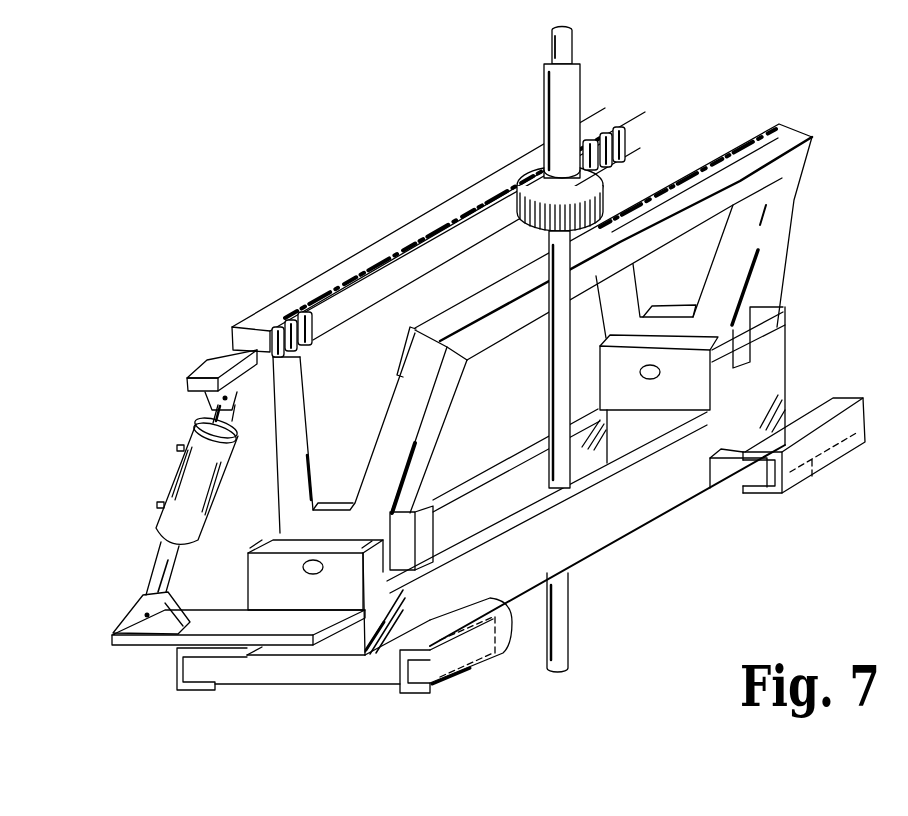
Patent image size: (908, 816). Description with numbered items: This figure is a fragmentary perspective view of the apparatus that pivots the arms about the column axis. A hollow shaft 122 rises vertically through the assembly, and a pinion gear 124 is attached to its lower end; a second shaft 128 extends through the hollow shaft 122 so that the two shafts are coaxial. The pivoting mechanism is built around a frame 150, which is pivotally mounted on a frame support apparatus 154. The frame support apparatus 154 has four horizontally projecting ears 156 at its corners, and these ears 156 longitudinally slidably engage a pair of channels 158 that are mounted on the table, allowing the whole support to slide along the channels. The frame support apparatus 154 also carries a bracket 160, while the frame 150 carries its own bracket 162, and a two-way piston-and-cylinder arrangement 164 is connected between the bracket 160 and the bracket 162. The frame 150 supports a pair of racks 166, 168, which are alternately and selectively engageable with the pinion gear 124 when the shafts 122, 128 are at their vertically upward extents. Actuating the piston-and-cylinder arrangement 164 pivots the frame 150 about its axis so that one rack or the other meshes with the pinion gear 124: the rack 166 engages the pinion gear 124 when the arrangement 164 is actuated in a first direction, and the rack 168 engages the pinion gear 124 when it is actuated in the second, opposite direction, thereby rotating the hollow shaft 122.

The hollow shaft 122 is at (572, 76).
The pinion gear 124 is at (532, 180).
The second shaft 128 is at (560, 371).
The frame 150 is at (247, 277).
The frame support apparatus 154 is at (592, 536).
The ears 156 is at (233, 672).
The channels 158 is at (183, 668).
The bracket 160 is at (288, 641).
The bracket 162 is at (203, 370).
The two-way piston-and-cylinder arrangement 164 is at (138, 487).
The rack 166 is at (318, 313).
The rack 168 is at (758, 128).